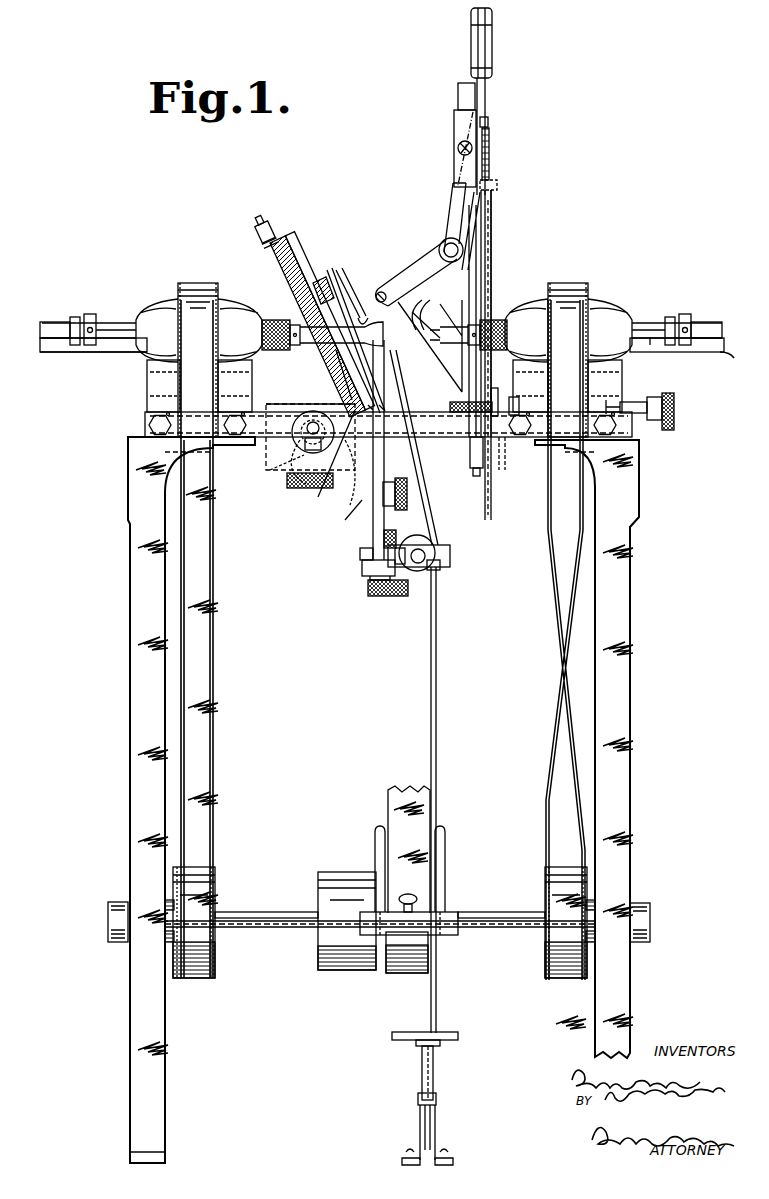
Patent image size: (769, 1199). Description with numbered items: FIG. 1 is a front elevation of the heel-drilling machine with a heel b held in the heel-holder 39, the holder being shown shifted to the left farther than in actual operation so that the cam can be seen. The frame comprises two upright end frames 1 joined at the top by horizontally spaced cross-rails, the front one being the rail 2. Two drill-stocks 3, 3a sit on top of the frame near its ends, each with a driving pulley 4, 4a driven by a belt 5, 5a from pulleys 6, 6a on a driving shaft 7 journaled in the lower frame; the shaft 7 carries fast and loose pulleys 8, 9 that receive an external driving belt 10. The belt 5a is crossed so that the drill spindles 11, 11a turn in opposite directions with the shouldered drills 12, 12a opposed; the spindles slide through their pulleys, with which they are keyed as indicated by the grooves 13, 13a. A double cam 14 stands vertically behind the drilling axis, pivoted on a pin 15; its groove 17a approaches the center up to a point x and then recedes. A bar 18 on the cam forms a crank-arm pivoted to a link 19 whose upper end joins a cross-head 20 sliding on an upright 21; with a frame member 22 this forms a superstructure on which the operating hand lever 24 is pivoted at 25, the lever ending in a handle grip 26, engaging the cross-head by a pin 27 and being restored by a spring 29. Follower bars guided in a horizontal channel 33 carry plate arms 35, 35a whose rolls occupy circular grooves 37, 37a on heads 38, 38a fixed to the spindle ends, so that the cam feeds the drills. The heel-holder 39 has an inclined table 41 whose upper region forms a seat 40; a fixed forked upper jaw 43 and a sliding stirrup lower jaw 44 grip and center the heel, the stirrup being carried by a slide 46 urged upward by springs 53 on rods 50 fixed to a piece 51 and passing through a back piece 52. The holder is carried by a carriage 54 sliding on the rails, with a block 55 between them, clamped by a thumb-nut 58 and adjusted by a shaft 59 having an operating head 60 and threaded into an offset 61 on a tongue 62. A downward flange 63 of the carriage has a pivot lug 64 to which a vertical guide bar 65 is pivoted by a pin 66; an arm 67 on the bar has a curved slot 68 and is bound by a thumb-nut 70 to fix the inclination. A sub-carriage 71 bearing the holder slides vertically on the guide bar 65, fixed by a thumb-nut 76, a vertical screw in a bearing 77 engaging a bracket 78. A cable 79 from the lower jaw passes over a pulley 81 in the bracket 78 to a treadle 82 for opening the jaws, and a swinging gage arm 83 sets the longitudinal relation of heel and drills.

The end frame 1 is at (120, 607).
The cross-rail 2 is at (254, 418).
The drill-stock 3 is at (166, 307).
The drill-stock 3a is at (612, 308).
The driving pulley 4 is at (182, 282).
The driving pulley 4a is at (588, 292).
The belt 5 is at (213, 659).
The crossed belt 5a is at (568, 608).
The pulley 6 is at (215, 965).
The pulley 6a is at (545, 965).
The driving shaft 7 is at (258, 912).
The fast pulley 8 is at (344, 972).
The loose pulley 9 is at (384, 975).
The external driving belt 10 is at (394, 802).
The drill spindle 11 is at (108, 322).
The drill spindle 11a is at (666, 322).
The drill 12 is at (280, 304).
The drill 12a is at (446, 353).
The groove 13 is at (126, 338).
The groove 13a is at (652, 344).
The double cam 14 is at (372, 288).
The pin 15 is at (436, 384).
The cam groove 17a is at (408, 252).
The bar 18 is at (448, 240).
The link 19 is at (448, 196).
The cross-head 20 is at (454, 116).
The upright 21 is at (478, 236).
The frame member 22 is at (502, 202).
The operating hand lever 24 is at (488, 86).
The pivot 25 is at (502, 175).
The handle grip 26 is at (494, 40).
The pin 27 is at (489, 128).
The spring 29 is at (490, 152).
The horizontal channel 33 is at (78, 354).
The plate arm 35 is at (46, 322).
The plate arm 35a is at (716, 320).
The circular groove 37 is at (84, 310).
The circular groove 37a is at (680, 312).
The head 38 is at (70, 344).
The head 38a is at (699, 355).
The heel-holder 39 is at (414, 512).
The seat 40 is at (300, 246).
The table 41 is at (386, 446).
The upper jaw 43 is at (332, 280).
The lower jaw 44 is at (332, 384).
The slide 46 is at (272, 220).
The rods 50 is at (258, 218).
The piece 51 is at (348, 398).
The back piece 52 is at (264, 246).
The springs 53 is at (280, 262).
The carriage 54 is at (284, 400).
The block 55 is at (274, 465).
The thumb-nut 58 is at (300, 492).
The shaft 59 is at (506, 384).
The operating head 60 is at (676, 418).
The offset 61 is at (502, 452).
The tongue 62 is at (466, 470).
The flange 63 is at (292, 424).
The pivot lug 64 is at (326, 506).
The guide bar 65 is at (362, 572).
The pivot pin 66 is at (351, 476).
The arm 67 is at (352, 532).
The slot 68 is at (292, 480).
The thumb-nut 70 is at (318, 452).
The sub-carriage 71 is at (360, 558).
The thumb-nut 76 is at (408, 494).
The bearing 77 is at (414, 572).
The bracket 78 is at (376, 588).
The cable 79 is at (430, 716).
The pulley 81 is at (436, 568).
The treadle 82 is at (446, 1030).
The gage arm 83 is at (428, 292).
The point x is at (426, 319).
The heel b is at (352, 296).